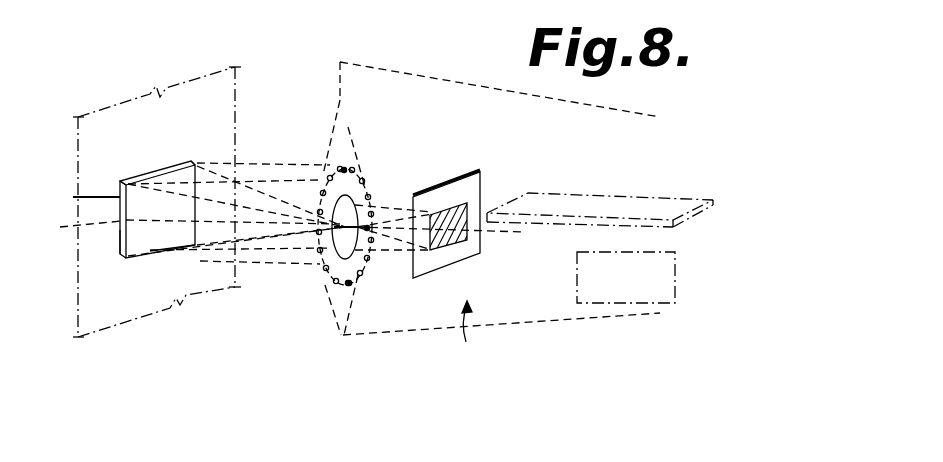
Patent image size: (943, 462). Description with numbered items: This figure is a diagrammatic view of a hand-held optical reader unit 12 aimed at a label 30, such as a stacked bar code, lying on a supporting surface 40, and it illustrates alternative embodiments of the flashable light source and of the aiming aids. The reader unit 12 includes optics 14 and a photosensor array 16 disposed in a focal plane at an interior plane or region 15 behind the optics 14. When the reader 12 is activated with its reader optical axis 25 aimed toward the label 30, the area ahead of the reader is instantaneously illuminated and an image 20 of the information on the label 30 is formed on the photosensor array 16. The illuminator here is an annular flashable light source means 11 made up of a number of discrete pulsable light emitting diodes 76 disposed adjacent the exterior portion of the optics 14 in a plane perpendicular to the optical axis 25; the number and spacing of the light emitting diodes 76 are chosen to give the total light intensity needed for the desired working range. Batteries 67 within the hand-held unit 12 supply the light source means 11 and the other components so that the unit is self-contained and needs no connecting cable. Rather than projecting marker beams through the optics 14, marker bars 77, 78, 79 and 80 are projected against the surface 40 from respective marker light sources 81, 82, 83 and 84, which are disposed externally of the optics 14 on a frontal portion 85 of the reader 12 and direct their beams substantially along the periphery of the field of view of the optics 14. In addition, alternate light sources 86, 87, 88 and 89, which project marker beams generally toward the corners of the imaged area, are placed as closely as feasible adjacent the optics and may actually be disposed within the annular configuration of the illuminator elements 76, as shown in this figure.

The flashable light source means 11 is at (318, 208).
The hand-held optical reader unit 12 is at (556, 327).
The optics 14 is at (362, 172).
The interior plane or region 15 is at (481, 328).
The photosensor array 16 is at (462, 177).
The image 20 is at (468, 208).
The reader optical axis 25 is at (62, 228).
The label 30 is at (121, 243).
The supporting surface 40 is at (140, 300).
The batteries 67 is at (680, 285).
The light emitting diodes 76 is at (327, 178).
The marker bar 77 is at (144, 179).
The marker bar 78 is at (197, 190).
The marker bar 79 is at (168, 247).
The marker bar 80 is at (78, 193).
The marker light source 81 is at (350, 180).
The marker light source 82 is at (368, 214).
The marker light source 83 is at (358, 273).
The marker light source 84 is at (322, 234).
The frontal portion 85 is at (334, 138).
The alternate light source 86 is at (306, 213).
The alternate light source 87 is at (372, 195).
The alternate light source 88 is at (366, 250).
The alternate light source 89 is at (323, 268).